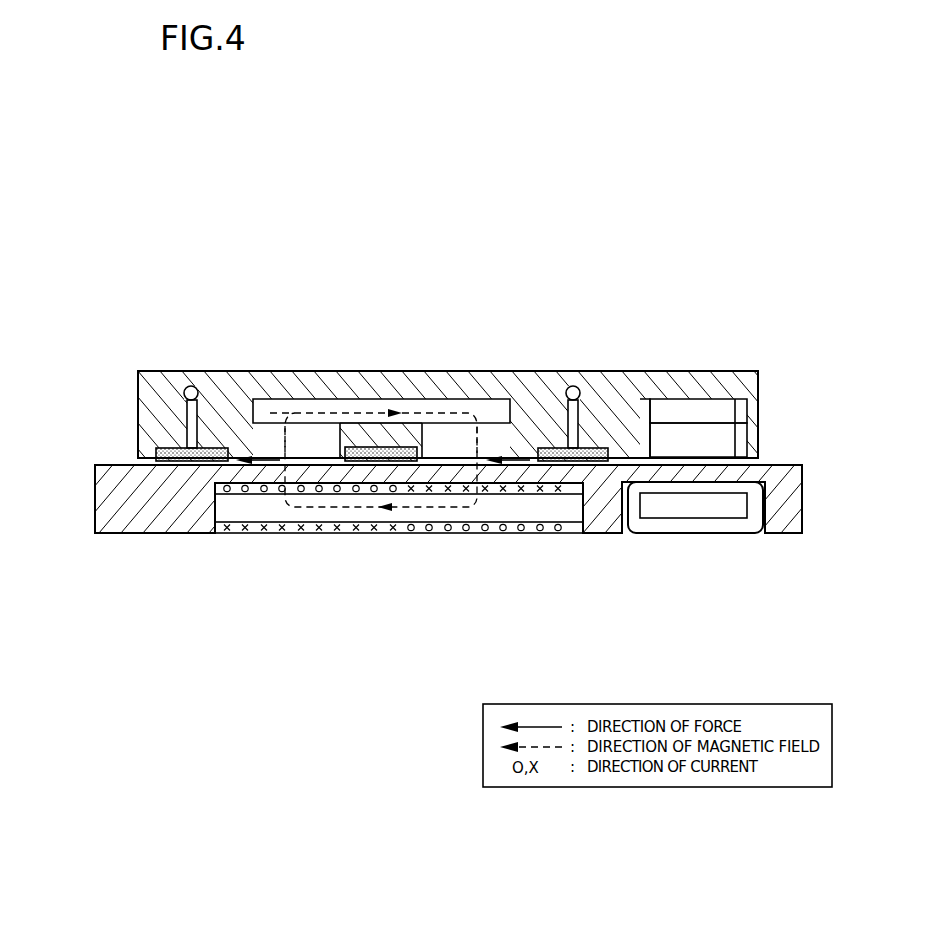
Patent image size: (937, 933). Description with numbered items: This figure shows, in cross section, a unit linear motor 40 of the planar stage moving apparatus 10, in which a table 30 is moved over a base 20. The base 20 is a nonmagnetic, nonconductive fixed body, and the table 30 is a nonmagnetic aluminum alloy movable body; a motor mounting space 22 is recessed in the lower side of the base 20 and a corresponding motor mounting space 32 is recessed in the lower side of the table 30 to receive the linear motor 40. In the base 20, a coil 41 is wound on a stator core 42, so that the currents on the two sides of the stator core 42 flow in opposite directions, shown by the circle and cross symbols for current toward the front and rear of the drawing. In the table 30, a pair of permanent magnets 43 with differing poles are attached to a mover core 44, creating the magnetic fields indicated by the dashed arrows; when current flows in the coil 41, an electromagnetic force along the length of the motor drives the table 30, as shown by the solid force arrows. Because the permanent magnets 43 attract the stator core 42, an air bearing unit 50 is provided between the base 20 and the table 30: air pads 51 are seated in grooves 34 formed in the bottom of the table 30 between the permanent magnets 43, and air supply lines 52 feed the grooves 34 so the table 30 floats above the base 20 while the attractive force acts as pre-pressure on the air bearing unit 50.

The planar stage moving apparatus 10 is at (175, 312).
The base 20 is at (145, 507).
The motor mounting space 22 is at (225, 505).
The table 30 is at (403, 383).
The motor mounting space 32 is at (275, 406).
The groove 34 is at (230, 445).
The linear motor 40 is at (576, 603).
The coil 41 is at (490, 523).
The stator core 42 is at (553, 505).
The permanent magnet 43 is at (455, 427).
The mover core 44 is at (424, 428).
The air bearing unit 50 is at (50, 378).
The air pad 51 is at (165, 456).
The air supply line 52 is at (190, 413).